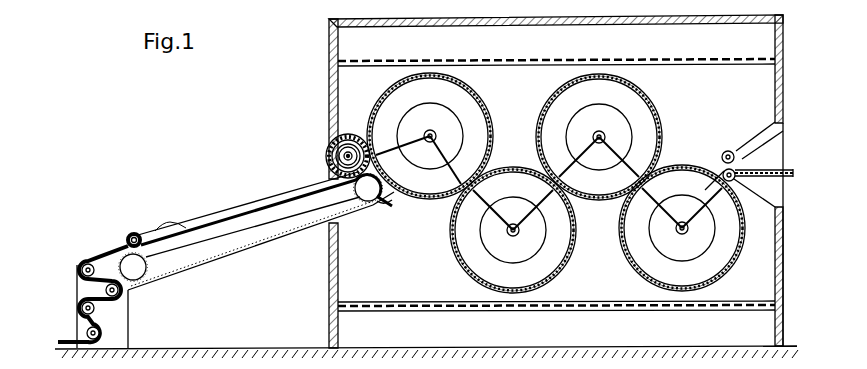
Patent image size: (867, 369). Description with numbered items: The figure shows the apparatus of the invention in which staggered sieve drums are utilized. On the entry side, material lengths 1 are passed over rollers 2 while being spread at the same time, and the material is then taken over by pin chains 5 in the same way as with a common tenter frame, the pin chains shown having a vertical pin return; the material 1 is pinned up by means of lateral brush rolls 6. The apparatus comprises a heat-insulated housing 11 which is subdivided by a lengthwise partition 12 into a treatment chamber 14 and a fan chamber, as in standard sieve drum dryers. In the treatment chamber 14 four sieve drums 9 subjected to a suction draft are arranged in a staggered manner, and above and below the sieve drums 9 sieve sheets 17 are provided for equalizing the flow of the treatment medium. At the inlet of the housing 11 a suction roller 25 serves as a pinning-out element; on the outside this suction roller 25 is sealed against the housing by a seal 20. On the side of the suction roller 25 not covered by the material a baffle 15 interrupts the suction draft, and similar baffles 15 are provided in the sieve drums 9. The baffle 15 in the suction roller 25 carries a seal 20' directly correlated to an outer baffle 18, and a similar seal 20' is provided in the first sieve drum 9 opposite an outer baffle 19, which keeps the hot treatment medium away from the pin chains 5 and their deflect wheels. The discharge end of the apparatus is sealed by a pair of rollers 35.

The material lengths 1 is at (69, 340).
The rollers 2 is at (96, 309).
The pin chains 5 is at (217, 256).
The lateral brush rolls 6 is at (133, 232).
The sieve drums 9 is at (430, 74).
The heat-insulated housing 11 is at (505, 24).
The lengthwise partition 12 is at (337, 80).
The treatment chamber 14 is at (329, 283).
The baffle 15 is at (514, 168).
The sieve sheets 17 is at (578, 57).
The outer baffle 18 is at (348, 133).
The outer baffle 19 is at (360, 214).
The seal 20 is at (323, 138).
The seal 20' is at (328, 182).
The suction roller 25 is at (338, 157).
The pair of rollers 35 is at (738, 161).